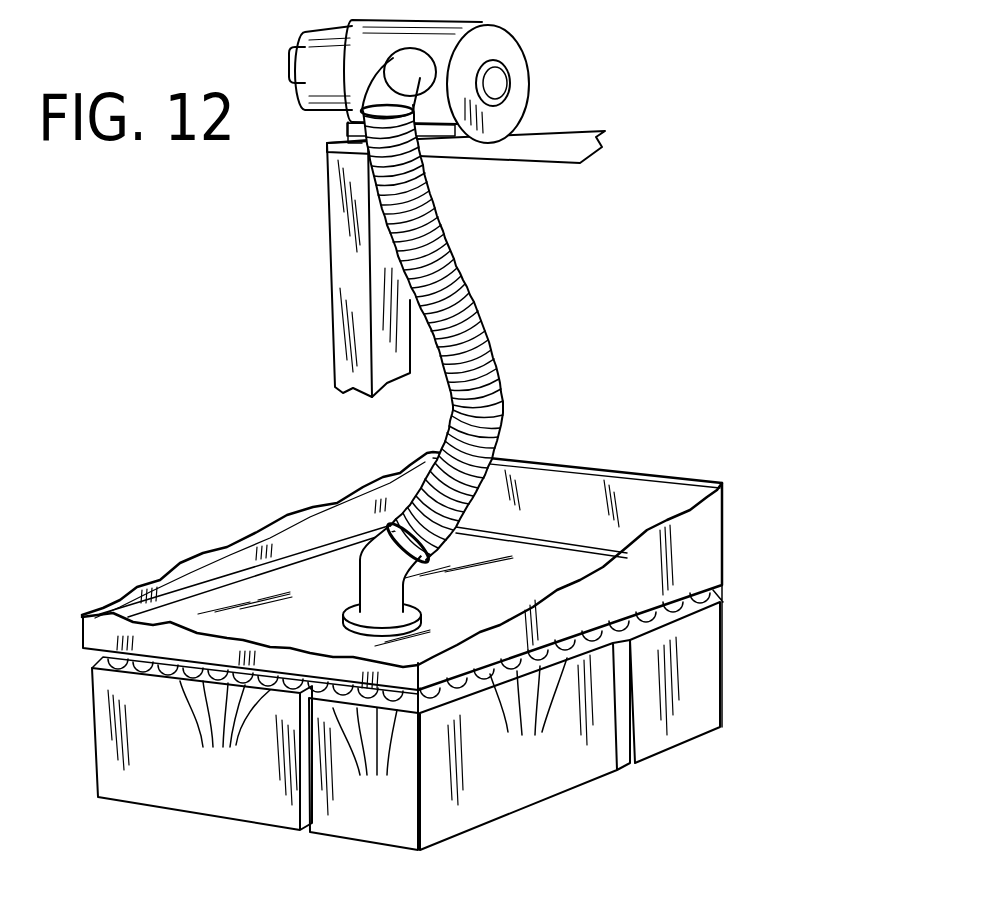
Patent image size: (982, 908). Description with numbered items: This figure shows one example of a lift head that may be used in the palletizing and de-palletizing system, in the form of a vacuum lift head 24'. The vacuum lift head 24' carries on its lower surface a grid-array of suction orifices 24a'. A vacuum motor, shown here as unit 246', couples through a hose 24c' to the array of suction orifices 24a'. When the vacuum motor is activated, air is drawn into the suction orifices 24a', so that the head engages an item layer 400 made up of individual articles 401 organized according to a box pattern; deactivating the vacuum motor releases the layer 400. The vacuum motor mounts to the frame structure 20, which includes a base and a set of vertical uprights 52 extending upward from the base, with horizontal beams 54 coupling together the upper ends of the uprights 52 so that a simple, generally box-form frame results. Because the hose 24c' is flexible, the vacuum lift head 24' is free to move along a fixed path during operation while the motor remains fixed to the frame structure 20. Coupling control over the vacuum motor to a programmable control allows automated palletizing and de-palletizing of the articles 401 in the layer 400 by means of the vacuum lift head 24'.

The frame structure 20 is at (302, 227).
The vertical uprights 52 is at (340, 343).
The horizontal beams 54 is at (544, 146).
The light source / motor housing 246' is at (466, 71).
The hose 24c' is at (492, 370).
The vacuum lift head 24' is at (451, 582).
The item layer 400 is at (722, 677).
The individual articles 401 is at (200, 800).
The suction orifices 24a' is at (373, 737).